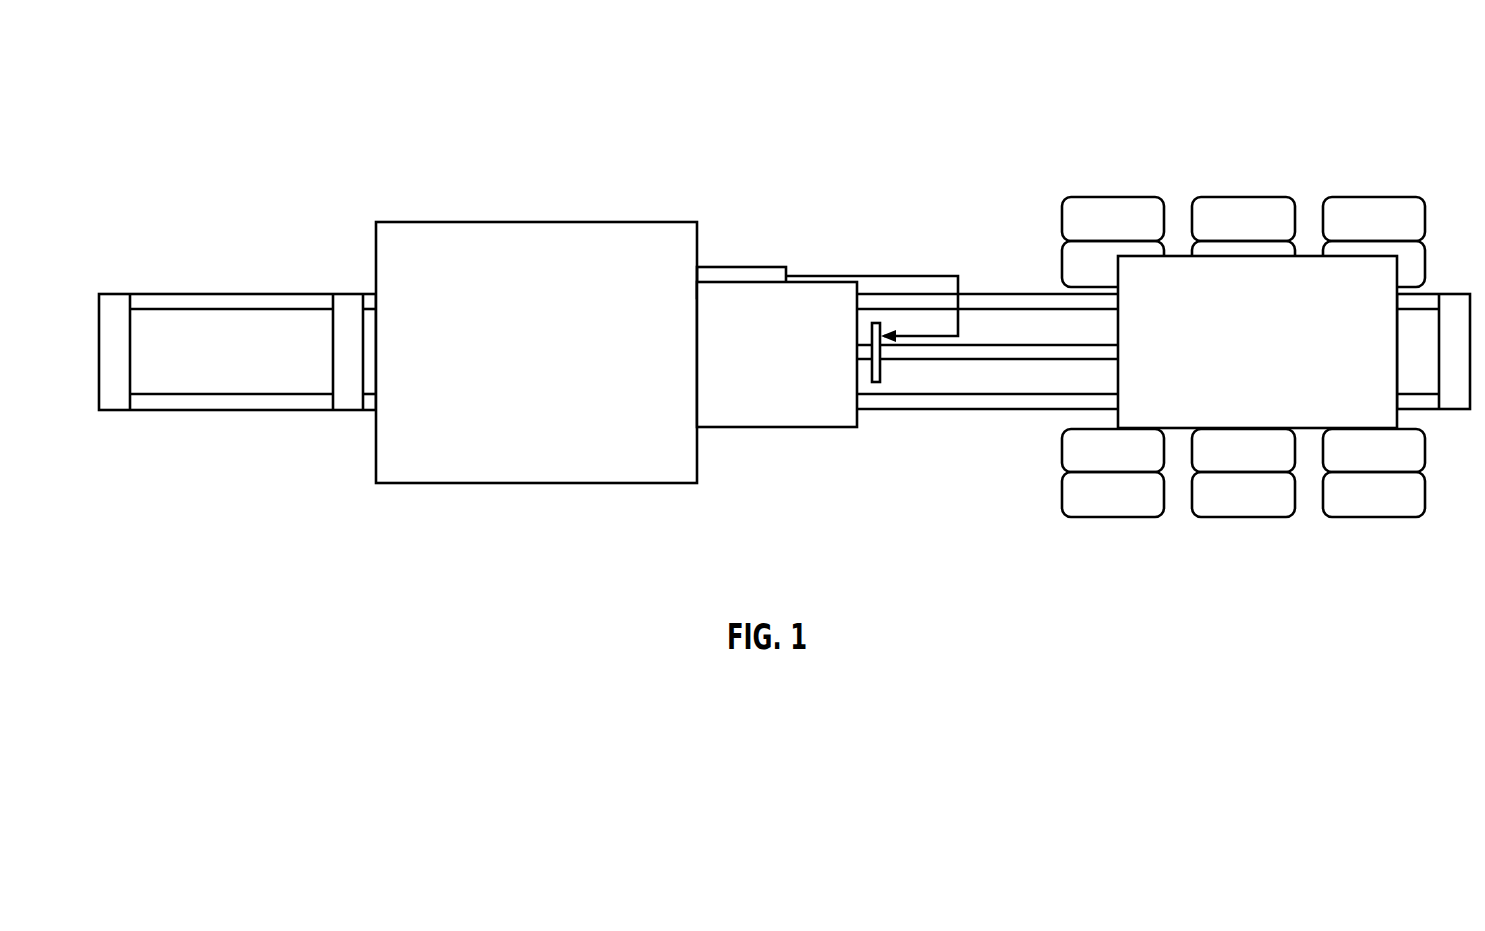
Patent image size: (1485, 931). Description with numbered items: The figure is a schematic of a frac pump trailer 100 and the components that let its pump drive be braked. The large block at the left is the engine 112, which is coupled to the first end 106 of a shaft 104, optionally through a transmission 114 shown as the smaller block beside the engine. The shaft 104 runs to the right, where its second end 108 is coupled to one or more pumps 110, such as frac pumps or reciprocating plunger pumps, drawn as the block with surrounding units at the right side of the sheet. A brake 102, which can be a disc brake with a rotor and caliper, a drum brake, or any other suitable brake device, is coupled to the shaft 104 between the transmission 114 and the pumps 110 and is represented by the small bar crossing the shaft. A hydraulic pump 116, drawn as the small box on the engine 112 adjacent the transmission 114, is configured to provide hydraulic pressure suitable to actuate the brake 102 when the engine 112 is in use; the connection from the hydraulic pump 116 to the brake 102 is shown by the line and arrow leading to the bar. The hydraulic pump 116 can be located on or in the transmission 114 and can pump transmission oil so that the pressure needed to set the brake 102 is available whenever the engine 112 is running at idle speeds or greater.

The pump trailer 100 is at (326, 88).
The brake 102 is at (875, 382).
The shaft 104 is at (985, 352).
The first end 106 is at (858, 349).
The second end 108 is at (1113, 351).
The pumps 110 is at (1279, 356).
The engine 112 is at (558, 366).
The transmission 114 is at (798, 366).
The hydraulic pump 116 is at (742, 283).